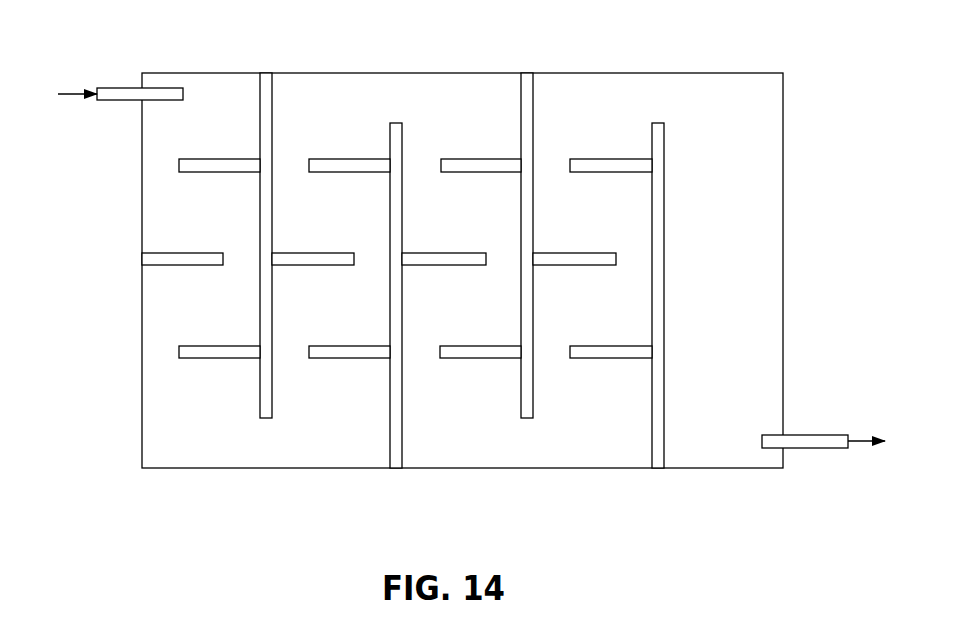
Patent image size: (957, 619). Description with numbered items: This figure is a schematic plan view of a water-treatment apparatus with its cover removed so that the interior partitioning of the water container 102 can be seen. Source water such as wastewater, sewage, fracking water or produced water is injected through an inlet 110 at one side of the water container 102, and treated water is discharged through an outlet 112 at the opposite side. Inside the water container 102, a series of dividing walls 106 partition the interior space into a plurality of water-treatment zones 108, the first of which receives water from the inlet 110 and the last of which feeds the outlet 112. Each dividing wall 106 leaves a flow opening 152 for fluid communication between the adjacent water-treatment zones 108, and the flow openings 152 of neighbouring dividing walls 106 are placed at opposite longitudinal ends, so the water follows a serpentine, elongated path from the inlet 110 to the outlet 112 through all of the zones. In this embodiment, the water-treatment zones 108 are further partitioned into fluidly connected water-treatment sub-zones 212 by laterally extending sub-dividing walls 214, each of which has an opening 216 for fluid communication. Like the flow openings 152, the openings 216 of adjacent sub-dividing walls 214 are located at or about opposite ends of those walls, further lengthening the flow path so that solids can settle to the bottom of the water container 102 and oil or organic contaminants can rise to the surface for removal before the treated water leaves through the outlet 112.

The water container 102 is at (783, 132).
The dividing wall 106 is at (272, 95).
The water-treatment zone 108 is at (193, 447).
The inlet 110 is at (120, 100).
The outlet 112 is at (808, 433).
The flow opening 152 is at (407, 97).
The water-treatment sub-zone 212 is at (190, 139).
The sub-dividing wall 214 is at (172, 265).
The opening 216 is at (240, 265).